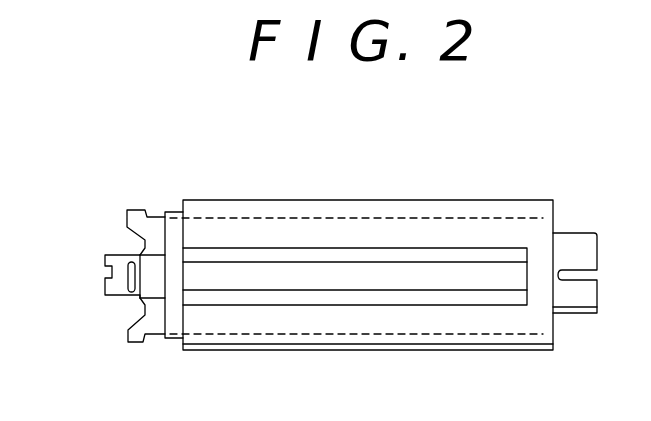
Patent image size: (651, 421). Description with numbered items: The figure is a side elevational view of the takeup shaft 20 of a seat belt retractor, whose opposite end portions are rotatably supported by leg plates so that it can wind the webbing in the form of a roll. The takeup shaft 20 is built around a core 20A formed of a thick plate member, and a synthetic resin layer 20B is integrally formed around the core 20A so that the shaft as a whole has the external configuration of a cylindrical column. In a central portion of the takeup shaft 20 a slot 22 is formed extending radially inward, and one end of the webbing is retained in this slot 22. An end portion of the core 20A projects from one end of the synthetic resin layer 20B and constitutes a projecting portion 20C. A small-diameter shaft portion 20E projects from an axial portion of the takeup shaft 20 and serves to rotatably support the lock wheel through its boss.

The takeup shaft 20 is at (379, 352).
The core 20A is at (433, 217).
The synthetic resin layer 20B is at (471, 357).
The projecting portion 20C is at (132, 352).
The small-diameter shaft portion 20E is at (103, 268).
The slot 22 is at (272, 283).